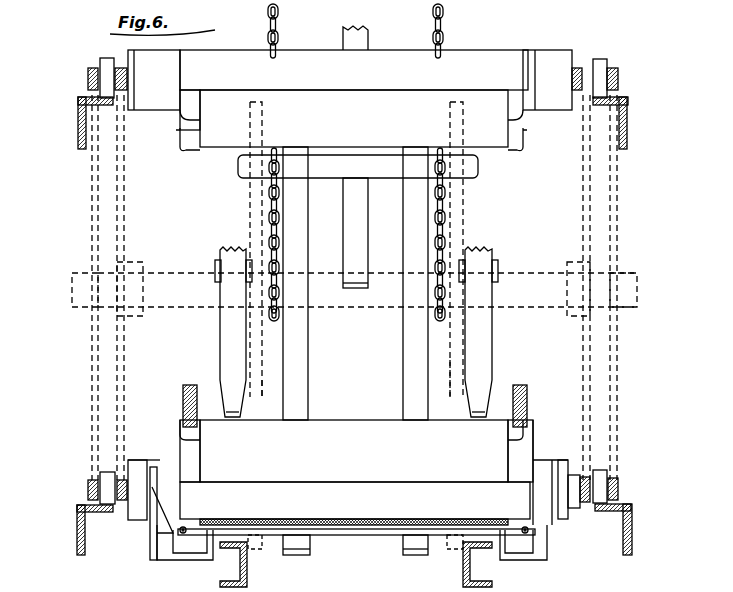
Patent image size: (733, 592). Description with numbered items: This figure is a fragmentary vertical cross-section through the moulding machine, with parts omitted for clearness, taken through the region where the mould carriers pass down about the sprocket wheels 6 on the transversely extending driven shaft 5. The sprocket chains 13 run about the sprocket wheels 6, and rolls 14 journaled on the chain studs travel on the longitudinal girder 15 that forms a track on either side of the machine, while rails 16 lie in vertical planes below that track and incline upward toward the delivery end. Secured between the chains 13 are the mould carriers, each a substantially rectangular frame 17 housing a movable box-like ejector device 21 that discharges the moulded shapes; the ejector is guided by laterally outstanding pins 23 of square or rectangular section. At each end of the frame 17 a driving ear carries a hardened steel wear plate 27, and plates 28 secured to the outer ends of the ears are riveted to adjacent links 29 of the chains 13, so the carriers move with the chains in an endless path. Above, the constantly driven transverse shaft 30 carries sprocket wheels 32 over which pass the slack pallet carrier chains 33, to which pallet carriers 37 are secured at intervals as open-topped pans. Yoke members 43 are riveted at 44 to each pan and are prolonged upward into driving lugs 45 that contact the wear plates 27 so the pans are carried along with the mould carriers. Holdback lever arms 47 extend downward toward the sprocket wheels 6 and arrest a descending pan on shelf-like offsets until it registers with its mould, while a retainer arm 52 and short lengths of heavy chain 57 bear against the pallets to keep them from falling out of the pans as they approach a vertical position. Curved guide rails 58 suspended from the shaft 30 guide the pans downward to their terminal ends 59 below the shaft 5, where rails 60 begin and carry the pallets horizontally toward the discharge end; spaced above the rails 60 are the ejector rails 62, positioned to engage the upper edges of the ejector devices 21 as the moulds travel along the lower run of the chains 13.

The driven shaft 5 is at (170, 276).
The sprocket wheel 6 is at (100, 213).
The sprocket chain 13 is at (88, 76).
The roll 14 is at (105, 58).
The longitudinal girder 15 is at (78, 100).
The rail 16 is at (75, 536).
The mould carrier frame 17 is at (355, 284).
The ejector device 21 is at (356, 286).
The pin 23 is at (183, 146).
The wear plate 27 is at (150, 466).
The plate 28 is at (130, 512).
The chain link 29 is at (127, 82).
The transverse shaft 30 is at (388, 163).
The sprocket wheel 32 is at (254, 102).
The sprocket chain 33 is at (263, 390).
The pallet carrier 37 is at (362, 535).
The yoke member 43 is at (172, 560).
The rivet 44 is at (205, 532).
The driving lug 45 is at (152, 487).
The holdback lever arm 47 is at (228, 324).
The retainer arm 52 is at (355, 228).
The chain 57 is at (268, 210).
The guide rail 58 is at (410, 327).
The terminal end 59 is at (305, 555).
The rail 60 is at (247, 566).
The ejector rail 62 is at (189, 385).